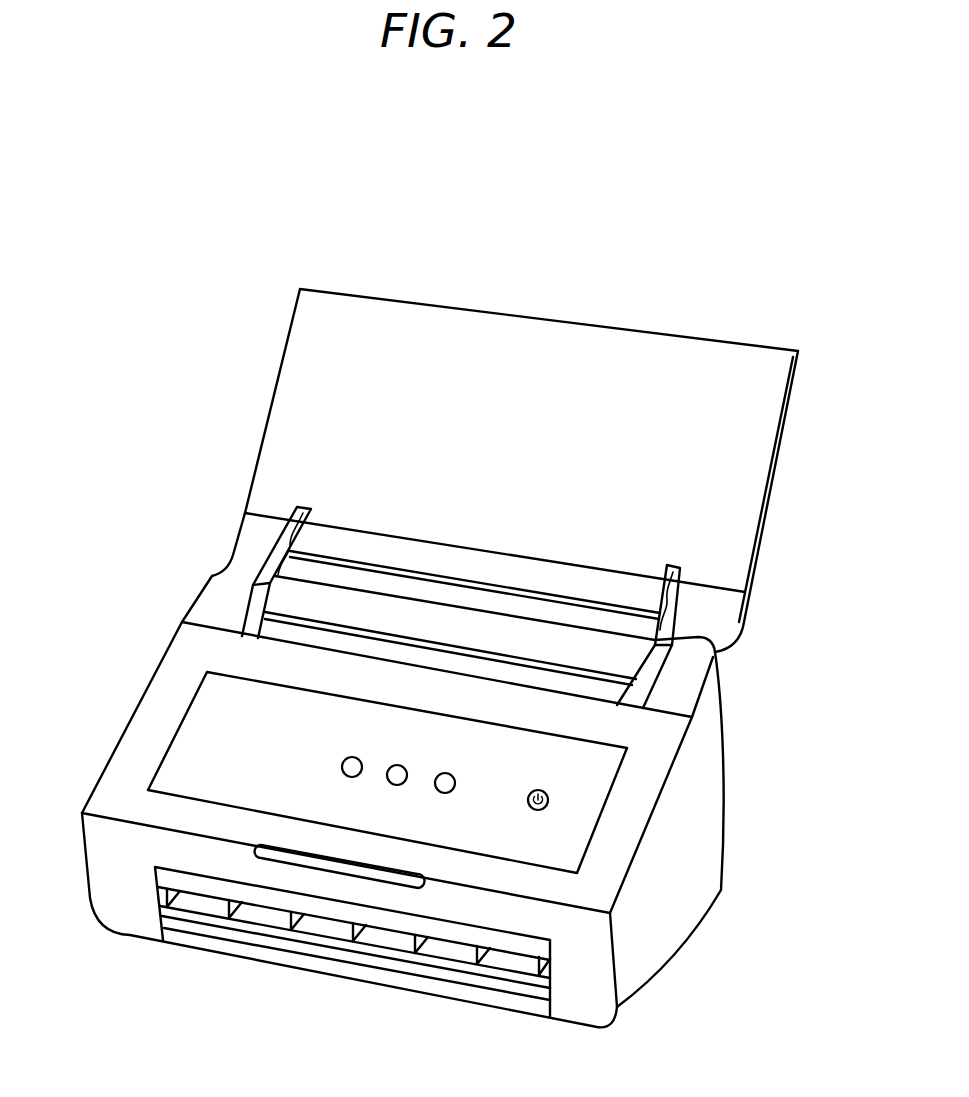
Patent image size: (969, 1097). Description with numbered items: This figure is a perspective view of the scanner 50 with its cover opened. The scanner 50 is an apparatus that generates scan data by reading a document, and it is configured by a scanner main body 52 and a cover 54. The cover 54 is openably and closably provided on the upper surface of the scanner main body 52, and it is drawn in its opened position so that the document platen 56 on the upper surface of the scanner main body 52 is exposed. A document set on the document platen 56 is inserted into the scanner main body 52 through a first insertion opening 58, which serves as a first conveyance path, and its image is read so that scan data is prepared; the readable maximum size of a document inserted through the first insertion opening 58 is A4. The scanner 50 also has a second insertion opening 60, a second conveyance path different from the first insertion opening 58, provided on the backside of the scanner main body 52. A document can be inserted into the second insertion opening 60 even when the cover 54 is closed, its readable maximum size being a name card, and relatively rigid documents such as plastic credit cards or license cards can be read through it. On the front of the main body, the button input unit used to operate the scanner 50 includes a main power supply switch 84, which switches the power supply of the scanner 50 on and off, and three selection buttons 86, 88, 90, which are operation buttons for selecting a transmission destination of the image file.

The scanner 50 is at (208, 292).
The scanner main body 52 is at (675, 886).
The cover 54 is at (345, 323).
The document platen 56 is at (579, 609).
The first insertion opening 58 is at (273, 628).
The second insertion opening 60 is at (745, 698).
The main power supply switch 84 is at (565, 780).
The selection button 86 is at (326, 782).
The selection button 88 is at (372, 789).
The selection button 90 is at (419, 803).